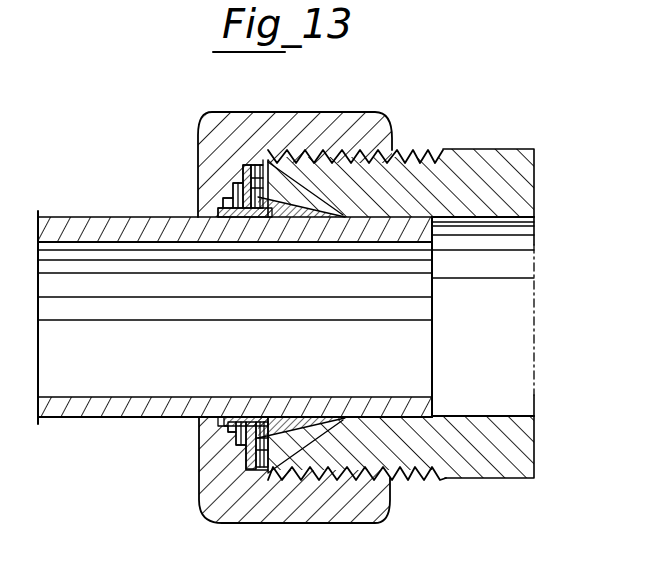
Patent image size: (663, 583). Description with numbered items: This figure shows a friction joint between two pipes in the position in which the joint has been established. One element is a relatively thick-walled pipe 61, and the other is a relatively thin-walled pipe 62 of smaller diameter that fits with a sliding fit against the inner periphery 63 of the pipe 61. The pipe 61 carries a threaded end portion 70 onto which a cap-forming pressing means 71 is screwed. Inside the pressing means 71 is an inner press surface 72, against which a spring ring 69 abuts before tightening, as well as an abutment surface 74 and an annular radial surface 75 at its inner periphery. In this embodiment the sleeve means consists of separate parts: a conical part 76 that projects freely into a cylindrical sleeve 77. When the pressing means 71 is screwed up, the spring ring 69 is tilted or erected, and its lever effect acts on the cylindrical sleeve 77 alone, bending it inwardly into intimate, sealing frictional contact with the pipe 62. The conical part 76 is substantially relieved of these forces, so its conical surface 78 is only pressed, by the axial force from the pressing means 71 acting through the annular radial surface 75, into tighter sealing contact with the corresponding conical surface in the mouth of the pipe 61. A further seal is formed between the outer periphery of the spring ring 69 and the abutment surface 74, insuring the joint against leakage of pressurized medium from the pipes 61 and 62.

The pipe 61 is at (518, 195).
The pipe 62 is at (70, 217).
The inner periphery 63 is at (527, 413).
The spring ring 69 is at (208, 457).
The threaded end portion 70 is at (398, 157).
The pressing means 71 is at (210, 124).
The inner press surface 72 is at (243, 173).
The abutment surface 74 is at (232, 462).
The annular radial surface 75 is at (228, 207).
The conical part 76 is at (313, 213).
The cylindrical sleeve 77 is at (224, 424).
The conical surface 78 is at (236, 462).